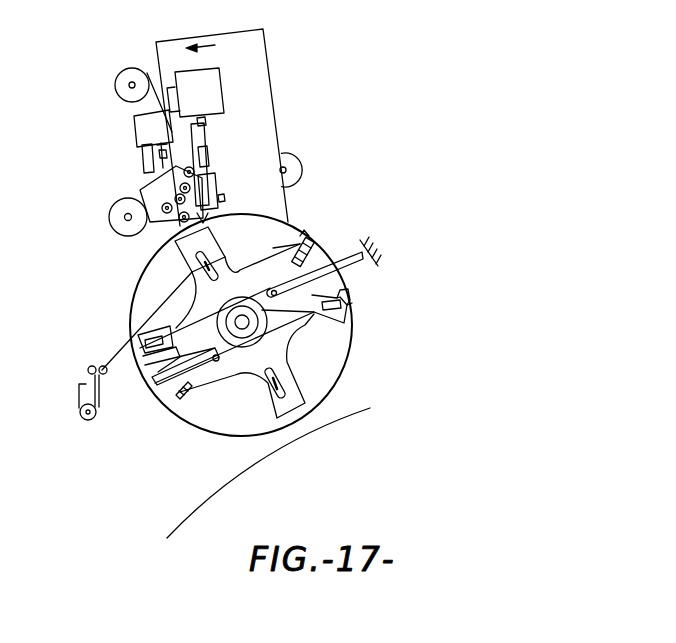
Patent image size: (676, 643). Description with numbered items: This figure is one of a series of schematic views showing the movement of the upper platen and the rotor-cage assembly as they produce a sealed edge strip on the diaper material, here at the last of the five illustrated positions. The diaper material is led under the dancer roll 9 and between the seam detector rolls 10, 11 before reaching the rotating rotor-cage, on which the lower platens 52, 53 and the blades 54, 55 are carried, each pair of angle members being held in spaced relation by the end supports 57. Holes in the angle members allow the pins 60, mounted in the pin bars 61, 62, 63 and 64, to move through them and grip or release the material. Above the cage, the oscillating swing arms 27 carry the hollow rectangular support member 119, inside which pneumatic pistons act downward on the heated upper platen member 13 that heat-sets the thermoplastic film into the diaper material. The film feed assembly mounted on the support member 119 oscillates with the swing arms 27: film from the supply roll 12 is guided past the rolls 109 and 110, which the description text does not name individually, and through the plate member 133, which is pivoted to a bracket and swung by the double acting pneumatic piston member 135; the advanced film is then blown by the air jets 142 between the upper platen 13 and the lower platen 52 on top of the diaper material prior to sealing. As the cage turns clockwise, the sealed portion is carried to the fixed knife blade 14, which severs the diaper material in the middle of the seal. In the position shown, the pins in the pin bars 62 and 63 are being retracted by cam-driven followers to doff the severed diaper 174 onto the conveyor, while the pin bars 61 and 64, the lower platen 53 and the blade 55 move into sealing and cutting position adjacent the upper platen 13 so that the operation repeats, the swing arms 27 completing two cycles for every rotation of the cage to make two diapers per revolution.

The dancer roll 9 is at (97, 412).
The seam detector roll 10 is at (106, 373).
The seam detector roll 11 is at (89, 366).
The supply roll 12 is at (124, 73).
The upper platen member 13 is at (213, 168).
The fixed knife blade 14 is at (343, 273).
The swing arm 27 is at (180, 40).
The lower platen 52 is at (278, 255).
The lower platen 53 is at (154, 387).
The blade 54 is at (356, 293).
The blade 55 is at (130, 353).
The end support 57 is at (188, 261).
The pin 60 is at (310, 244).
The pin bar 61 is at (306, 230).
The pin bar 62 is at (350, 315).
The pin bar 63 is at (188, 398).
The pin bar 64 is at (146, 336).
The roller 109 is at (109, 222).
The roller 110 is at (298, 176).
The hollow rectangular support member 119 is at (224, 89).
The plate member 133 is at (144, 188).
The double acting pneumatic piston member 135 is at (142, 156).
The air jets 142 is at (206, 221).
The severed diaper 174 is at (279, 450).